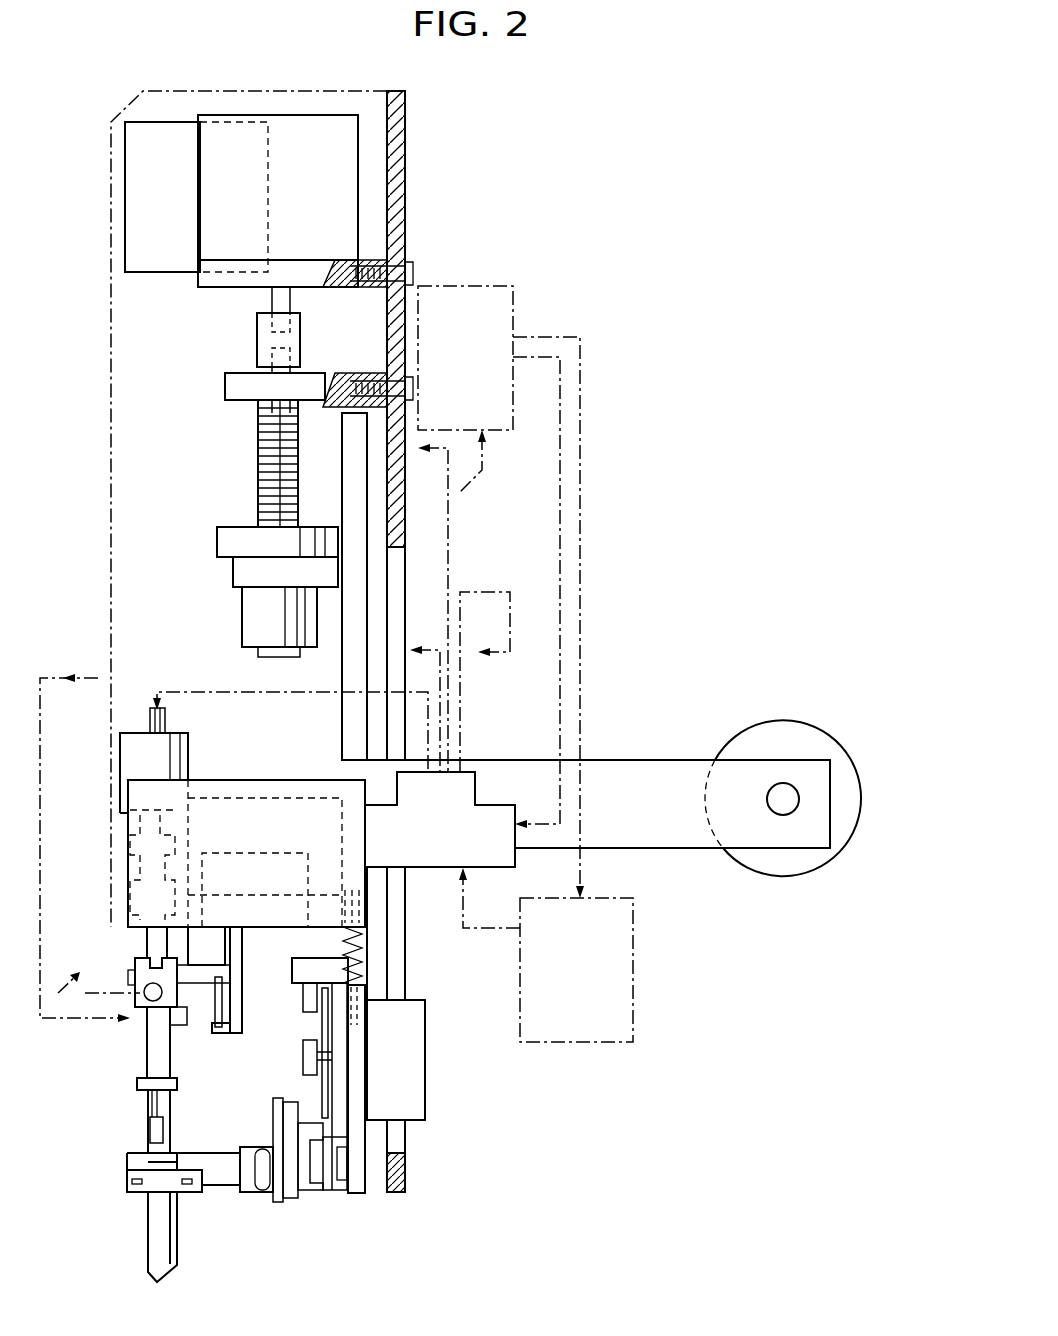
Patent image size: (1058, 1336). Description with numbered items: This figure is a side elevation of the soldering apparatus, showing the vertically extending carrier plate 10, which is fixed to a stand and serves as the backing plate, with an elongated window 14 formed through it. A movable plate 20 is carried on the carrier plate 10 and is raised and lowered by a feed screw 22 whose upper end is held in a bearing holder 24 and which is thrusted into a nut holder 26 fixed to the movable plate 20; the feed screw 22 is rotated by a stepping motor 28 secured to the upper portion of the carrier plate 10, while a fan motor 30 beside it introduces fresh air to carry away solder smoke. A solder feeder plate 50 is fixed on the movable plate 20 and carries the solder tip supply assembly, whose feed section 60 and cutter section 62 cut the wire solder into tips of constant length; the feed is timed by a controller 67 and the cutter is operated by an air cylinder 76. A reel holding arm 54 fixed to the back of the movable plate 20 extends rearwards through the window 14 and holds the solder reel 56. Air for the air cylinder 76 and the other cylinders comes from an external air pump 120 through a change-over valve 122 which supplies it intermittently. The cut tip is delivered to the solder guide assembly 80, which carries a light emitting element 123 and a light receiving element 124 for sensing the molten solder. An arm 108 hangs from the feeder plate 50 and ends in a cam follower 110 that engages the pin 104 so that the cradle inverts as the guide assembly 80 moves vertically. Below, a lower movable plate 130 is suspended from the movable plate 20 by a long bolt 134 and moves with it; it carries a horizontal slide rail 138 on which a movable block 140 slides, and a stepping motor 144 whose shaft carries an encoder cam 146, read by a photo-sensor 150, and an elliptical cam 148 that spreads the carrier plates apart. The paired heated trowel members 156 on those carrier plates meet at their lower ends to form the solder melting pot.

The carrier plate 10 is at (397, 180).
The window 14 is at (405, 1140).
The movable plate 20 is at (367, 520).
The feed screw 22 is at (258, 462).
The bearing holder 24 is at (225, 387).
The nut holder 26 is at (242, 610).
The stepping motor 28 is at (358, 150).
The fan motor 30 is at (125, 180).
The solder feeder plate 50 is at (225, 780).
The reel holding arm 54 is at (663, 760).
The solder reel 56 is at (770, 720).
The feed section 60 is at (240, 853).
The cutter section 62 is at (140, 940).
The controller 67 is at (513, 303).
The air cylinder 76 is at (133, 732).
The solder guide assembly 80 is at (138, 1048).
The pin 104 is at (212, 1000).
The arm 108 is at (242, 983).
The cam follower 110 is at (217, 1033).
The air pump 120 is at (635, 963).
The change-over valve 122 is at (503, 800).
The light emitting element 123 is at (148, 1147).
The light receiving element 124 is at (142, 1022).
The lower movable plate 130 is at (370, 1185).
The long bolt 134 is at (358, 890).
The slide rail 138 is at (342, 1193).
The movable block 140 is at (313, 1193).
The stepping motor 144 is at (425, 1087).
The encoder cam 146 is at (308, 1012).
The cam 148 is at (307, 1037).
The photo-sensor 150 is at (317, 957).
The trowel member 156 is at (155, 1242).